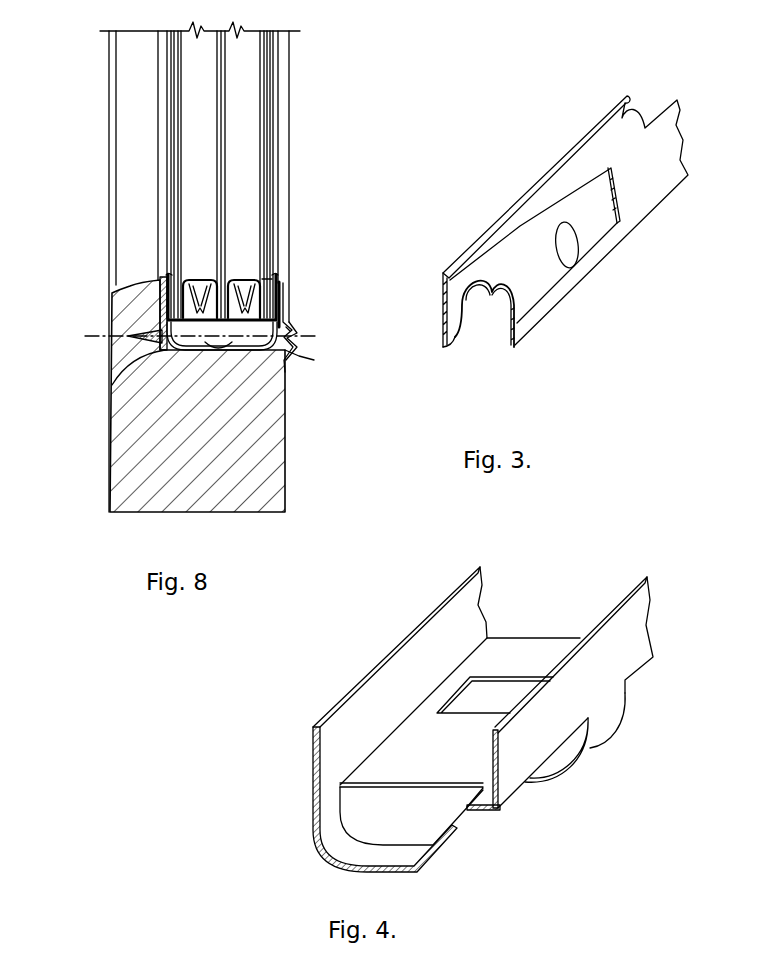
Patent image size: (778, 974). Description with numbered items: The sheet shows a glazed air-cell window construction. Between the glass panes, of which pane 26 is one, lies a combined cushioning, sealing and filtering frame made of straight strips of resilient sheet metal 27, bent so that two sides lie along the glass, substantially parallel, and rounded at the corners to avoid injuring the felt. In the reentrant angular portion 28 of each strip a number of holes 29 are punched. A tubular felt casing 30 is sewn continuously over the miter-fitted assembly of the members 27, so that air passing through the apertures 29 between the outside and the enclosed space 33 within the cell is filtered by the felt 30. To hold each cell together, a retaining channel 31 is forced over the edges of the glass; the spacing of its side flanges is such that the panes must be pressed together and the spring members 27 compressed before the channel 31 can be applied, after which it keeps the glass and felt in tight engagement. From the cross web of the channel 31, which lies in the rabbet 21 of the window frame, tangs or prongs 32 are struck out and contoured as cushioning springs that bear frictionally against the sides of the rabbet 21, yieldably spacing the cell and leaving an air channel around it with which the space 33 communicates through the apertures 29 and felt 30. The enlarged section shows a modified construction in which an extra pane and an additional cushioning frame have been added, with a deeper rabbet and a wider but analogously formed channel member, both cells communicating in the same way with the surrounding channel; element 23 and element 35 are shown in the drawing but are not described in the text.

In FIG. 8, the rabbet 21 is at (128, 337).
In FIG. 8, the bracket 23 is at (160, 277).
In FIG. 8, the pane 26 is at (223, 83).
In FIG. 8, the strips of resilient sheet metal 27 is at (240, 275).
In FIG. 3, the strips of resilient sheet metal 27 is at (620, 243).
In FIG. 3, the reentrant angular portion 28 is at (490, 292).
In FIG. 8, the holes 29 is at (268, 280).
In FIG. 3, the holes 29 is at (568, 255).
In FIG. 8, the felt casing 30 is at (205, 280).
In FIG. 4, the retaining channel 31 is at (363, 683).
In FIG. 8, the tangs or prongs 32 is at (160, 354).
In FIG. 4, the tangs or prongs 32 is at (313, 830).
In FIG. 8, the space within each cell 33 is at (195, 120).
In FIG. 8, the lip 35 is at (290, 288).